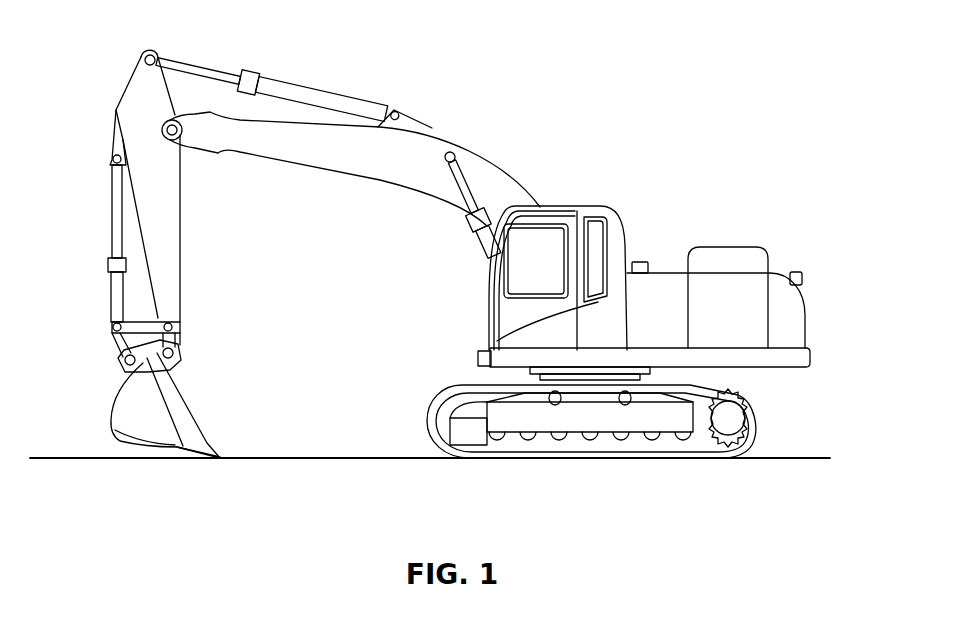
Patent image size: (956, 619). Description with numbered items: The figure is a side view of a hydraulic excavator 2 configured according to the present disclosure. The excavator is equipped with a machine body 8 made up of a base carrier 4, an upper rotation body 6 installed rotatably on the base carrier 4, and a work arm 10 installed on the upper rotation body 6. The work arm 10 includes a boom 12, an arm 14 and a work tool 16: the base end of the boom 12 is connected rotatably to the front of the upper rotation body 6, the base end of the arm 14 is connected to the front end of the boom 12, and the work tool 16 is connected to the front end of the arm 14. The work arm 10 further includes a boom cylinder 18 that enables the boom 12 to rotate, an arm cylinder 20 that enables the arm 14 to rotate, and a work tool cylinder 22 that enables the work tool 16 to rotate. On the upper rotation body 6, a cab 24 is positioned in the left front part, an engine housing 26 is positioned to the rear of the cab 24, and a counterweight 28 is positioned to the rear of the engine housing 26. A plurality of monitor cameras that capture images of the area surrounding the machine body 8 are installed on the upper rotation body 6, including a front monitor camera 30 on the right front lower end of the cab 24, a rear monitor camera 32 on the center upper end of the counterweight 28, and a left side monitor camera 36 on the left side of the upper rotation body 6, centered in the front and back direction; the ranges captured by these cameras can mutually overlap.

The hydraulic excavator 2 is at (814, 244).
The base carrier 4 is at (760, 437).
The upper rotation body 6 is at (776, 373).
The machine body 8 is at (838, 375).
The work arm 10 is at (425, 98).
The boom 12 is at (500, 172).
The arm 14 is at (126, 96).
The work tool 16 is at (130, 405).
The boom cylinder 18 is at (470, 238).
The arm cylinder 20 is at (272, 84).
The work tool cylinder 22 is at (112, 200).
The cab 24 is at (617, 222).
The engine housing 26 is at (733, 257).
The counterweight 28 is at (796, 331).
The front monitor camera 30 is at (477, 358).
The rear monitor camera 32 is at (804, 276).
The left side monitor camera 36 is at (640, 262).